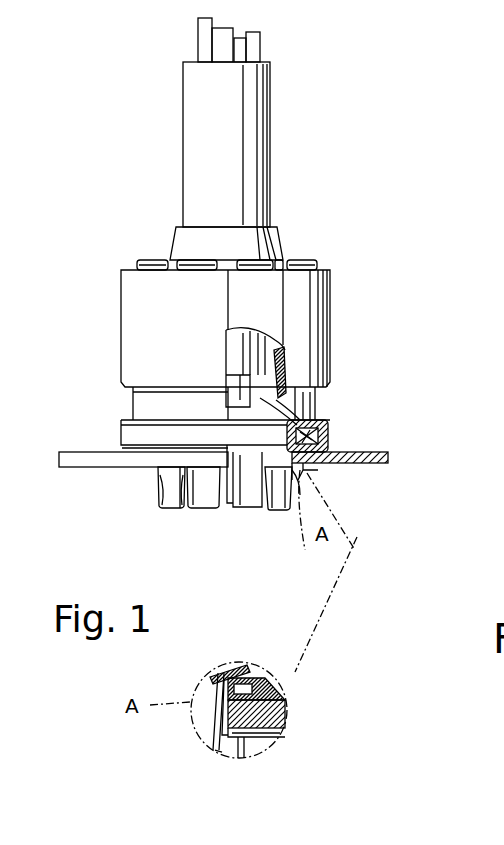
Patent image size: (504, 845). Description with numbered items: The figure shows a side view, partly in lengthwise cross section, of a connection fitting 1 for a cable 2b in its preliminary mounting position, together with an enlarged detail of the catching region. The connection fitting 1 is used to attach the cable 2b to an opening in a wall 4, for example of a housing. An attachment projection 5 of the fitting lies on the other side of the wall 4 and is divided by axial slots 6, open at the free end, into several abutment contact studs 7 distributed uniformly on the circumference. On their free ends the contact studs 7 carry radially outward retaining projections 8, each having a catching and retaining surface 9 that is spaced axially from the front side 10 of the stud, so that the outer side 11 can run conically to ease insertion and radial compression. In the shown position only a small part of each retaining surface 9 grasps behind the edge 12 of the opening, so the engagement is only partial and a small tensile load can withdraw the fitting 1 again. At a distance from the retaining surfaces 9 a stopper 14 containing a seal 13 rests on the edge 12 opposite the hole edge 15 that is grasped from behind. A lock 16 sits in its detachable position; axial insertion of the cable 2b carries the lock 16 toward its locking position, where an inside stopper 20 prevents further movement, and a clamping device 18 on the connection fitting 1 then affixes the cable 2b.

In FIG. 1, the connection fitting 1 is at (121, 197).
In FIG. 1, the cable 2b is at (204, 101).
In FIG. 1, the wall 4 is at (80, 452).
In FIG. 1, the attachment projection 5 is at (146, 496).
In FIG. 1, the slots 6 is at (233, 512).
In FIG. 1, the abutment contact studs 7 is at (170, 512).
In FIG. 1A, the abutment contact studs 7 is at (222, 755).
In FIG. 1, the retaining projections 8 is at (310, 470).
In FIG. 1A, the retaining projections 8 is at (270, 740).
In FIG. 1A, the catching and retaining surface 9 is at (215, 725).
In FIG. 1, the front side 10 is at (209, 520).
In FIG. 1, the outer side 11 is at (301, 470).
In FIG. 1A, the outer side 11 is at (245, 755).
In FIG. 1, the edge 12 is at (305, 468).
In FIG. 1A, the edge 12 is at (270, 718).
In FIG. 1, the seal 13 is at (328, 433).
In FIG. 1, the stopper 14 is at (333, 440).
In FIG. 1A, the stopper 14 is at (257, 685).
In FIG. 1A, the hole edge 15 is at (215, 678).
In FIG. 1, the lock 16 is at (287, 372).
In FIG. 1A, the lock 16 is at (232, 668).
In FIG. 1, the clamping device 18 is at (303, 258).
In FIG. 1, the stopper 20 is at (297, 425).